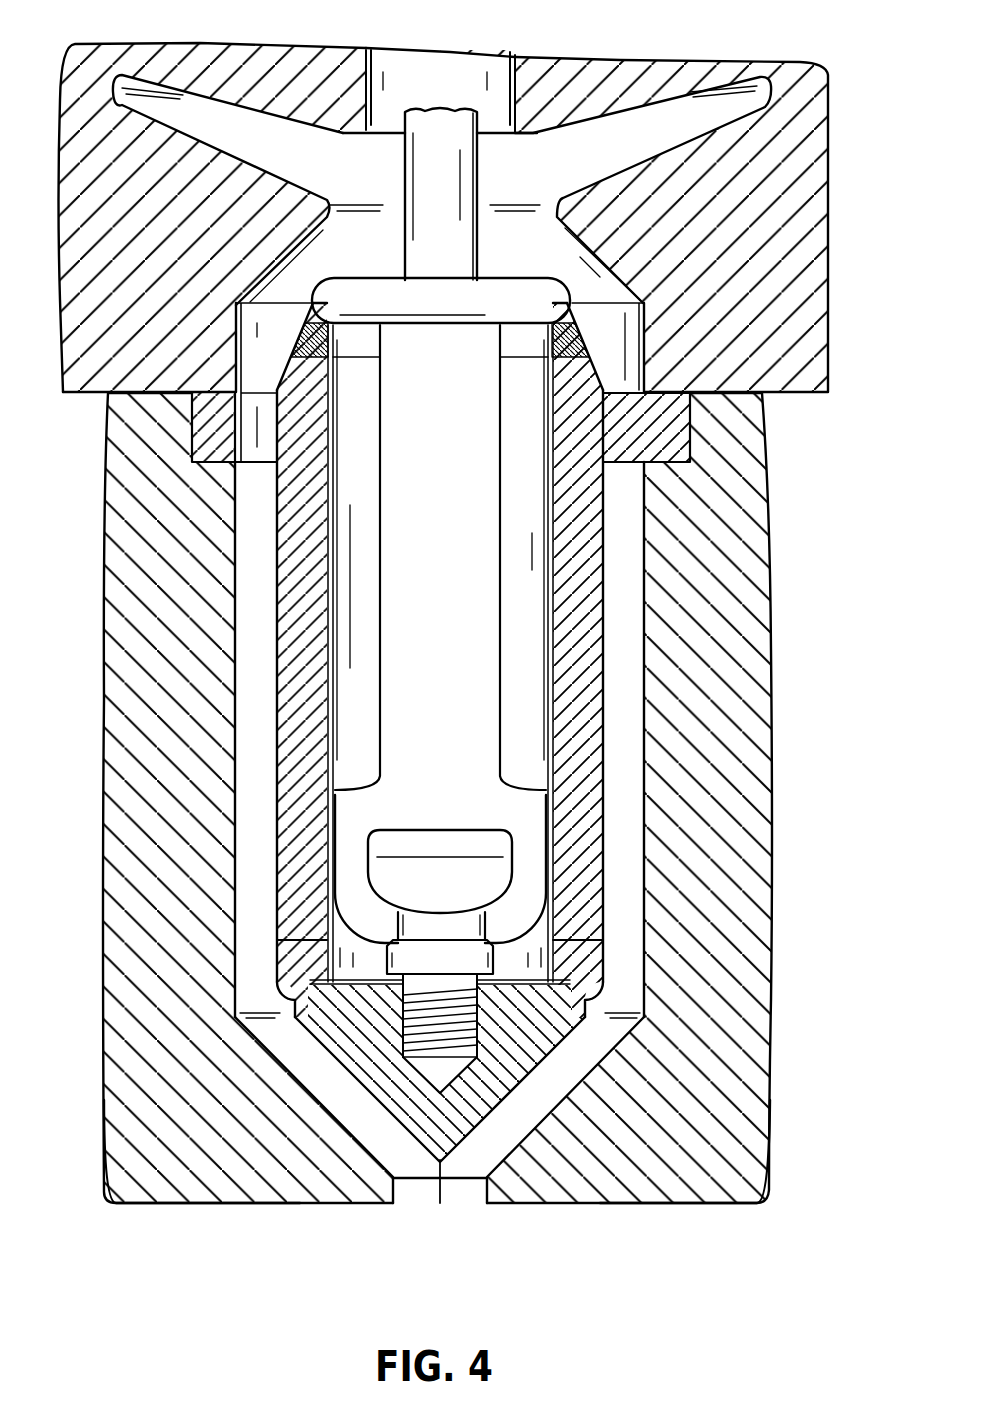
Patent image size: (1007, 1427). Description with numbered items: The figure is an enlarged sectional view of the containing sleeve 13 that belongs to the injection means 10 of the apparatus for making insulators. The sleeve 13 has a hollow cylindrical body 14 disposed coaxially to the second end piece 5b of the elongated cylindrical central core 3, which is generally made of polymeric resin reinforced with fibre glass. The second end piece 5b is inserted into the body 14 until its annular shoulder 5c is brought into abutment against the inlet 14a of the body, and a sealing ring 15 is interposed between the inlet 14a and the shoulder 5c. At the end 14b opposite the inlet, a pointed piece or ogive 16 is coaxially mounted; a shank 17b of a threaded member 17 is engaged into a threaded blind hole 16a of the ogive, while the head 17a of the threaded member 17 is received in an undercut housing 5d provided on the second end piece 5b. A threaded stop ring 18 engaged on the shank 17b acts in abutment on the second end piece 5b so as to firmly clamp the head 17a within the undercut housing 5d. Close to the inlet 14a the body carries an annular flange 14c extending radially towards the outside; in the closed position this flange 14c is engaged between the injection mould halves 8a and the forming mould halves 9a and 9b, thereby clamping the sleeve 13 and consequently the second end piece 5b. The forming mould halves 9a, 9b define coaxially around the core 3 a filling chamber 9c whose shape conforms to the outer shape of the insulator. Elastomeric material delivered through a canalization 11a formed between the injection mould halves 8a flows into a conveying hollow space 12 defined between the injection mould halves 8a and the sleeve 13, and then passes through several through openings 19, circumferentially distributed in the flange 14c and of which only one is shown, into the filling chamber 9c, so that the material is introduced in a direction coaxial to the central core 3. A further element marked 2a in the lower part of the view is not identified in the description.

The lower housing body portion 2a is at (218, 1165).
The cylindrical central core 3 is at (457, 190).
The second end piece 5b is at (455, 515).
The annular shoulder 5c is at (514, 293).
The undercut housing 5d is at (368, 842).
The injection mould halves 8a is at (682, 1188).
The forming mould half 9a is at (733, 68).
The forming mould half 9b is at (203, 63).
The filling chamber 9c is at (583, 137).
The injection means 10 is at (462, 1208).
The canalization 11a is at (427, 1193).
The conveying hollow space 12 is at (633, 718).
The containing sleeve 13 is at (606, 545).
The hollow cylindrical body 14 is at (583, 617).
The cylindrical body inlet 14a is at (340, 375).
The end of the cylindrical body 14b is at (303, 937).
The annular flange 14c is at (202, 443).
The sealing ring 15 is at (330, 332).
The pointed piece or ogive 16 is at (368, 1185).
The threaded blind hole 16a is at (445, 1074).
The threaded member 17 is at (481, 924).
The head 17a is at (447, 868).
The shank 17b is at (410, 998).
The threaded stop ring 18 is at (482, 965).
The through openings 19 is at (255, 420).